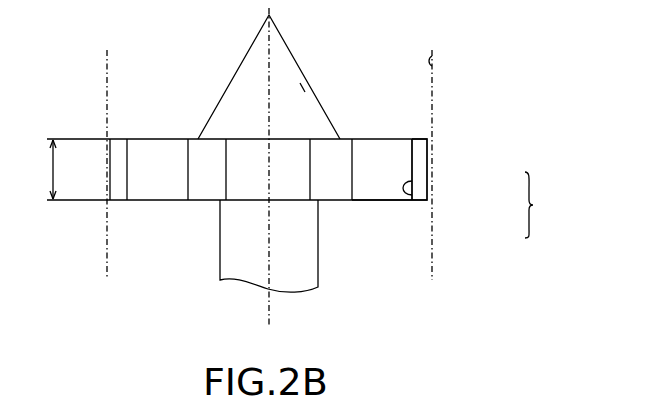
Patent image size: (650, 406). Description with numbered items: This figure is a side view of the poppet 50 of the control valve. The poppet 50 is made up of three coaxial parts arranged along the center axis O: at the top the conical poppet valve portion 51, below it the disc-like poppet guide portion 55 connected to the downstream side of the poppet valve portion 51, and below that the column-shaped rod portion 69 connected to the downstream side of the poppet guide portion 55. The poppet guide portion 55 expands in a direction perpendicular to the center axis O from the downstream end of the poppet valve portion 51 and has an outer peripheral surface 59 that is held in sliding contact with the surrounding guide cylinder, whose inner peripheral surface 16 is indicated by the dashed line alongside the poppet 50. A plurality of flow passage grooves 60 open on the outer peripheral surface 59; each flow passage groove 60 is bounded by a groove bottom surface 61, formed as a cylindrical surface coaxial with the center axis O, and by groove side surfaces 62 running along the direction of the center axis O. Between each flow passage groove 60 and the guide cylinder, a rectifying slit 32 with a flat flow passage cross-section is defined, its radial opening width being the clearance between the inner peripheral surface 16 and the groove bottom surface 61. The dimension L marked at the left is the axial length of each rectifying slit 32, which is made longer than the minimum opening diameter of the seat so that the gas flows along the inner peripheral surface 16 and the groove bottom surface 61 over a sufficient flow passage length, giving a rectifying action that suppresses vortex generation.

The poppet 50 is at (218, 97).
The poppet valve portion 51 is at (300, 83).
The inner peripheral surface 16 is at (434, 52).
The poppet guide portion 55 is at (415, 139).
The outer peripheral surface 59 is at (418, 156).
The groove side surface 62 is at (412, 190).
The groove bottom surface 61 is at (389, 193).
The flow passage groove 60 is at (544, 205).
The rod portion 69 is at (318, 230).
The rectifying slit 32 is at (247, 195).
The length L is at (45, 169).
The center axis O is at (268, 303).